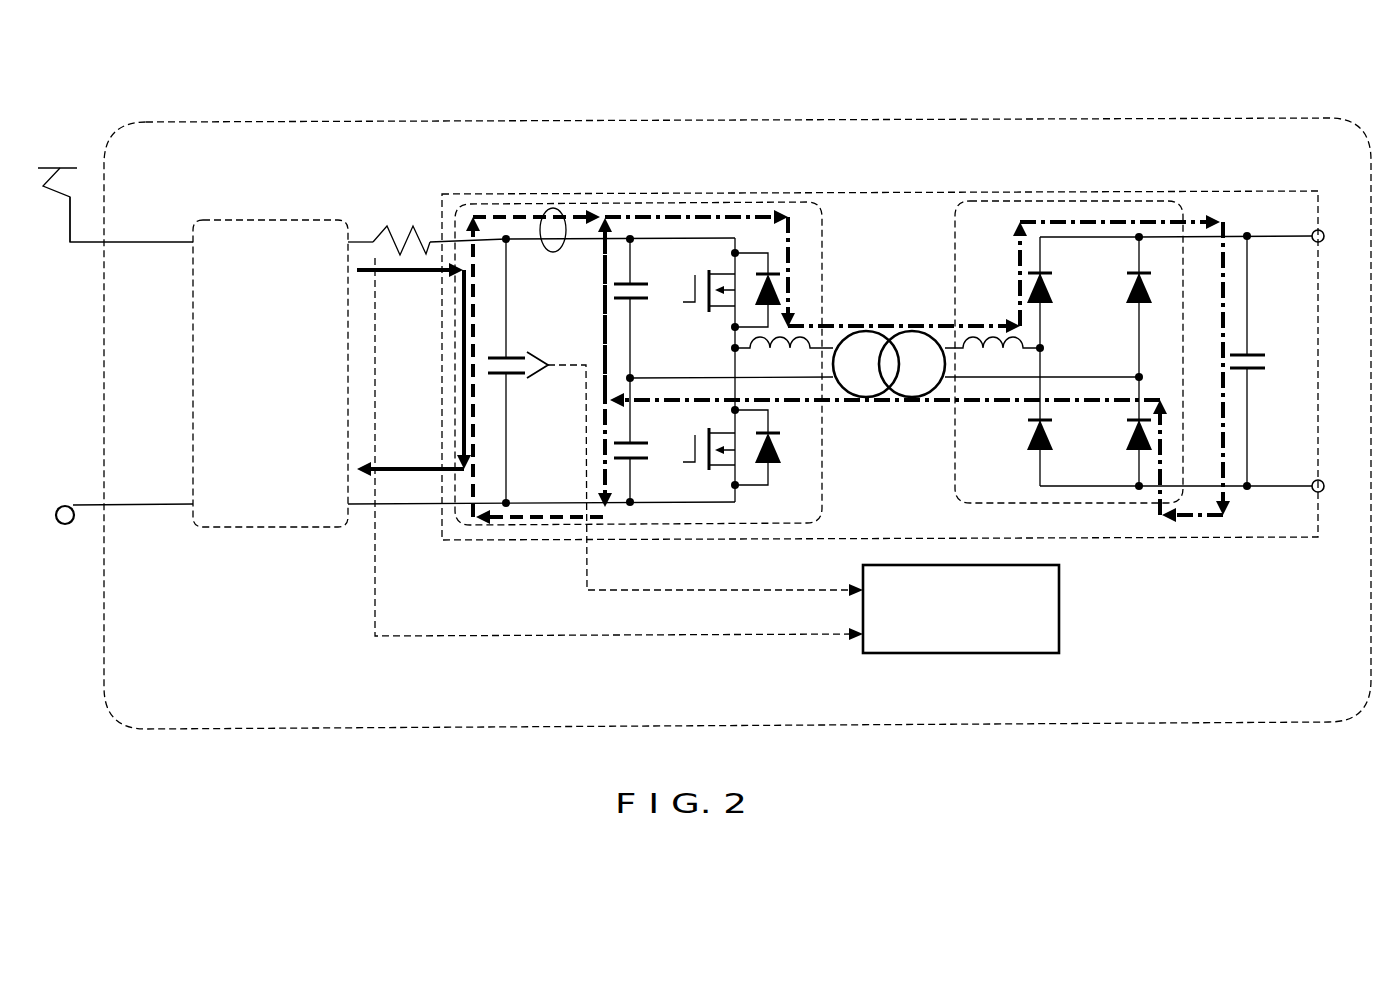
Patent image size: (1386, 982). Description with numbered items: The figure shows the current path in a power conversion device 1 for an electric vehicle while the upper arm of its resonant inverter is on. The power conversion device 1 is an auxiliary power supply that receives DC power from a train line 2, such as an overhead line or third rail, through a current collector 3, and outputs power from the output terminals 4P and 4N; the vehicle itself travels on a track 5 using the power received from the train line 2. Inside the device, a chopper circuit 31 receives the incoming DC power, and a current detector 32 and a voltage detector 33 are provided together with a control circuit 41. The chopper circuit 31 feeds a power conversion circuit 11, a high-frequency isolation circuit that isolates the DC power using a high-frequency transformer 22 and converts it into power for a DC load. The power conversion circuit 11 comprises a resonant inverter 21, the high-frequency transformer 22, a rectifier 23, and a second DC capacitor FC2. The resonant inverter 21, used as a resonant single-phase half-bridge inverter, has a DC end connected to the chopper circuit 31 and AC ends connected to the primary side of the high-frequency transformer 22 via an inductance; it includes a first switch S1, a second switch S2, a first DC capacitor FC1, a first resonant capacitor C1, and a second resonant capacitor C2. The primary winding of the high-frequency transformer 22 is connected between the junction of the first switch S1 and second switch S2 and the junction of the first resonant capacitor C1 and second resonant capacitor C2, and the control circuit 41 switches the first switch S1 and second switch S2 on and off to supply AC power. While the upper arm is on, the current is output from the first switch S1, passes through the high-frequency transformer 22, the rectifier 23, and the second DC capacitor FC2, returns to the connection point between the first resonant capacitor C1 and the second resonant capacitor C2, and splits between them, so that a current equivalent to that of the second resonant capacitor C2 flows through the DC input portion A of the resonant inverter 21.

The power conversion device 1 is at (191, 122).
The train line 2 is at (55, 166).
The current collector 3 is at (62, 200).
The track 5 is at (63, 524).
The chopper circuit 31 is at (272, 220).
The current detector 32 is at (394, 224).
The voltage detector 33 is at (556, 362).
The power conversion circuit 11 is at (553, 194).
The resonant inverter 21 is at (659, 365).
The high-frequency transformer 22 is at (894, 331).
The rectifier 23 is at (1077, 201).
The control circuit 41 is at (1061, 608).
The output terminal 4P is at (1322, 231).
The output terminal 4N is at (1322, 481).
The DC input portion A is at (560, 250).
The first resonant capacitor C1 is at (642, 268).
The second resonant capacitor C2 is at (644, 428).
The first switch S1 is at (703, 313).
The second switch S2 is at (703, 473).
The first DC capacitor FC1 is at (511, 378).
The second DC capacitor FC2 is at (1252, 352).